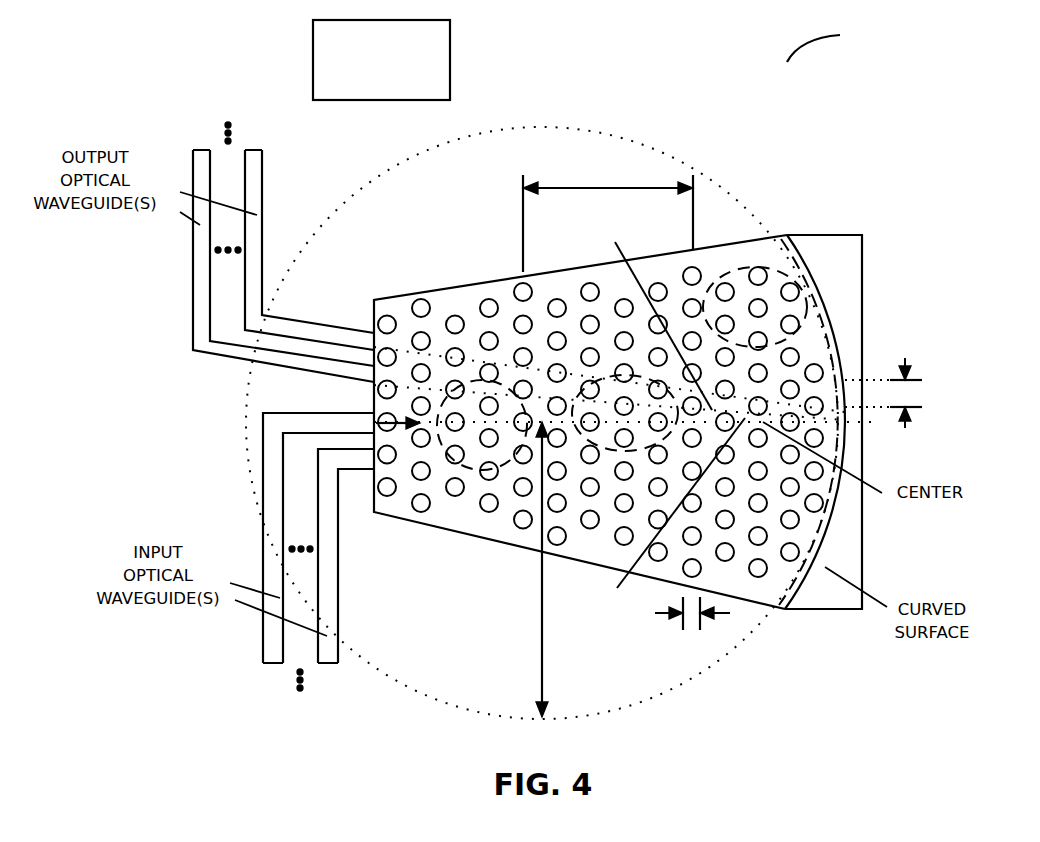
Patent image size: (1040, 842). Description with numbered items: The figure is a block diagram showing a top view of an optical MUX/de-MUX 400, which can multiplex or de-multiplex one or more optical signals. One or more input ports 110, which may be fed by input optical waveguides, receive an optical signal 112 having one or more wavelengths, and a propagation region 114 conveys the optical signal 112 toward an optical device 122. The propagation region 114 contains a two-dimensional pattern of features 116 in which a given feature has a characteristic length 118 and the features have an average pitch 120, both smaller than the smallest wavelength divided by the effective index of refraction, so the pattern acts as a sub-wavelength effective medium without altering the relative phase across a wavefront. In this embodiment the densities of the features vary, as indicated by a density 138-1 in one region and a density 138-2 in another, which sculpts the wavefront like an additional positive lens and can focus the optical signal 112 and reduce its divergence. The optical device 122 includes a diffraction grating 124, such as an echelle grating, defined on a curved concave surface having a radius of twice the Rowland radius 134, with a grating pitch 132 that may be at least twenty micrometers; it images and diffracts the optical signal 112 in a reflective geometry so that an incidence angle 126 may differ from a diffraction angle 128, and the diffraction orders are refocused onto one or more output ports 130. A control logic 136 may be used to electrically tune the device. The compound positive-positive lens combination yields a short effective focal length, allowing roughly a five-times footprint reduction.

The optical MUX/de-MUX 400 is at (876, 39).
The control logic 136 is at (366, 93).
The propagation region 114 is at (477, 325).
The optical device 122 is at (837, 235).
The diffraction grating 124 is at (833, 343).
The grating pitch 132 is at (907, 394).
The output ports 130 is at (278, 328).
The input ports 110 is at (330, 462).
The optical signal 112 is at (403, 425).
The pattern of features 116 is at (457, 470).
The density 138-1 is at (655, 440).
The density 138-2 is at (748, 267).
The average pitch 120 is at (600, 185).
The diffraction angle 128 is at (645, 302).
The incidence angle 126 is at (668, 529).
The Rowland radius 134 is at (542, 580).
The characteristic length 118 is at (693, 628).